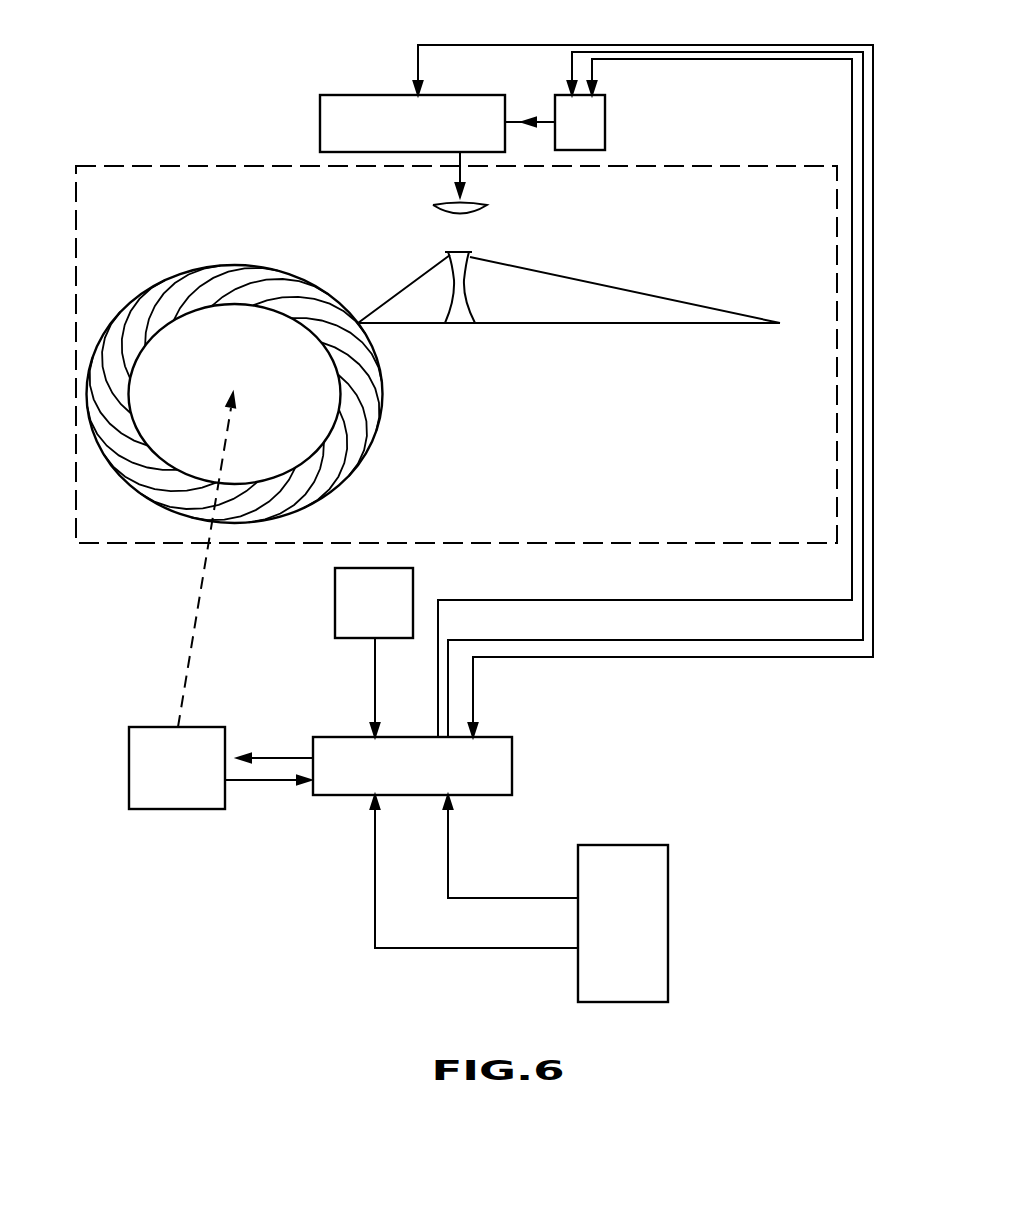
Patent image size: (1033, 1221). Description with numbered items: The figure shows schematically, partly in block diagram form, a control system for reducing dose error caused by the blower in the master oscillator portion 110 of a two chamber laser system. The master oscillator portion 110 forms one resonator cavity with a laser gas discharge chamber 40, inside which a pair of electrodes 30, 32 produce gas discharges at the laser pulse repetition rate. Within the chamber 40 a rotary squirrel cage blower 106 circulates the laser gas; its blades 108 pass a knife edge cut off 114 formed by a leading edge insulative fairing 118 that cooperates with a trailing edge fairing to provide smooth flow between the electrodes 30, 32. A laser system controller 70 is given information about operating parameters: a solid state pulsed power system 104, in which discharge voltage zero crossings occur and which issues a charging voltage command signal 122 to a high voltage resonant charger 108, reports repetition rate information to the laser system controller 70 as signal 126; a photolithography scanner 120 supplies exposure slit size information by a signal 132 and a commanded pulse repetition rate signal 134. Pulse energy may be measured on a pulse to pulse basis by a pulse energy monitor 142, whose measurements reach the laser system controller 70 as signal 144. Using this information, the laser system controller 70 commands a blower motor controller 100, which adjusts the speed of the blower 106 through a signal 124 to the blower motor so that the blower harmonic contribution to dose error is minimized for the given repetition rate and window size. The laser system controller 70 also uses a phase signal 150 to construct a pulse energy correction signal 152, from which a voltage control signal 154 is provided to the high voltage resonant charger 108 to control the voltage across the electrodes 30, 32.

The electrode 30 is at (487, 205).
The electrode 32 is at (463, 258).
The laser gas discharge chamber 40 is at (748, 480).
The laser system controller 70 is at (492, 767).
The controller 100 is at (160, 798).
The solid state pulsed power system 104 is at (348, 108).
The blower 106 is at (367, 484).
The high voltage resonant charger 108 is at (605, 118).
The master oscillator portion 110 is at (207, 138).
The knife edge cut off 114 is at (362, 297).
The insulative fairing 118 is at (580, 297).
The scanner 120 is at (638, 918).
The charging voltage command signal 122 is at (800, 642).
The signal to blower motor 124 is at (197, 602).
The signal 126 is at (673, 658).
The signal 132 is at (533, 898).
The commanded pulse repetition rate signal 134 is at (375, 897).
The pulse energy monitor 142 is at (390, 592).
The signal 144 is at (372, 656).
The phase signal 150 is at (255, 782).
The pulse energy correction signal 152 is at (290, 757).
The voltage control signal 154 is at (540, 598).